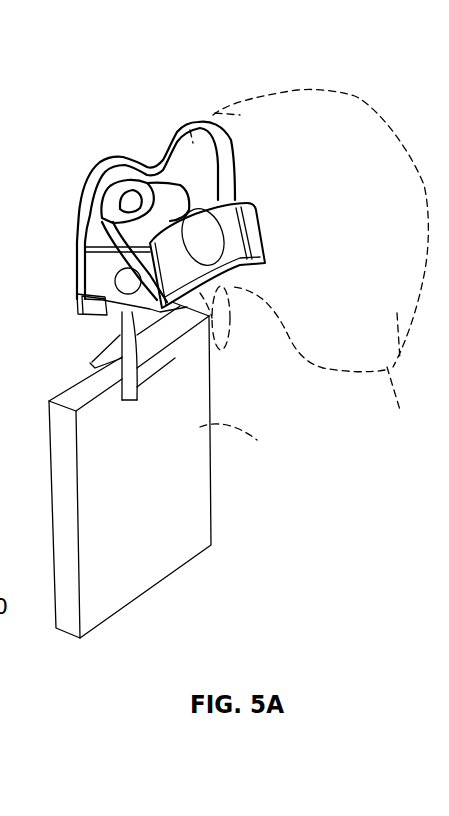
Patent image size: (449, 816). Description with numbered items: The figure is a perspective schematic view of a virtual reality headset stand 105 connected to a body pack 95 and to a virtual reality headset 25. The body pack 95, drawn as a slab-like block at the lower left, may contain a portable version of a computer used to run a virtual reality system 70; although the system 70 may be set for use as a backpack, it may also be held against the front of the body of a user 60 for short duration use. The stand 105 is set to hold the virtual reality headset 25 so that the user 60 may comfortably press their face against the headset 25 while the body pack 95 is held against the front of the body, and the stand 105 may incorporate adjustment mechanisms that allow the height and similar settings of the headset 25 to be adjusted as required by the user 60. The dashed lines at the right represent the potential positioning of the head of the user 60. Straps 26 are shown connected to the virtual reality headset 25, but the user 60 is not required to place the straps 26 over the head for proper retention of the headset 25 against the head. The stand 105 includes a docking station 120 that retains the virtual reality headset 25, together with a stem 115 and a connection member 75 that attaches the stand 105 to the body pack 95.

The user 60 is at (357, 97).
The straps 26 is at (97, 163).
The virtual reality headset 25 is at (77, 243).
The virtual reality system 70 is at (77, 308).
The docking station 120 is at (77, 296).
The connection member 75 is at (91, 362).
The virtual reality headset stand 105 is at (167, 335).
The stem 115 is at (155, 372).
The body pack 95 is at (213, 462).